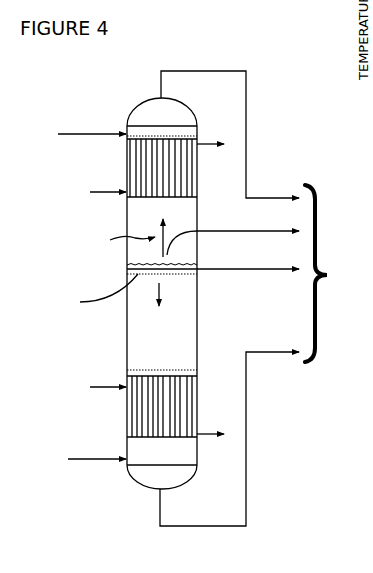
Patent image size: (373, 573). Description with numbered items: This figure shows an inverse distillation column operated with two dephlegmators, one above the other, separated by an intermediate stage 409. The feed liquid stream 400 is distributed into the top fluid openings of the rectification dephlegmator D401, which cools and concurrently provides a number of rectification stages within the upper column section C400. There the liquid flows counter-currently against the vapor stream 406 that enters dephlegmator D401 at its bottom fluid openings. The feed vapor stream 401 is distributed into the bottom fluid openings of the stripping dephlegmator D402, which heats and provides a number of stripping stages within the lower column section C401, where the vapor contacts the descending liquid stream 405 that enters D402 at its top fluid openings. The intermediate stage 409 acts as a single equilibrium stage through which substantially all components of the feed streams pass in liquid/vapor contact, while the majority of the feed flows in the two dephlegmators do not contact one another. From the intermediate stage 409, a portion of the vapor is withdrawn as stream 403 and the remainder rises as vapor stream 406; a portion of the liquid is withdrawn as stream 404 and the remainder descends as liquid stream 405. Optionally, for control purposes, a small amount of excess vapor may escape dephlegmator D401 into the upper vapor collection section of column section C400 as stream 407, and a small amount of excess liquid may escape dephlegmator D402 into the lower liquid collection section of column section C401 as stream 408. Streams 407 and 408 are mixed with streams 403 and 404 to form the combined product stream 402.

The feed liquid stream 400 is at (73, 135).
The feed vapor stream 401 is at (79, 459).
The combined product stream 402 is at (338, 273).
The withdrawn vapor stream 403 is at (248, 222).
The withdrawn liquid stream 404 is at (248, 282).
The liquid stream 405 is at (163, 306).
The vapor stream 406 is at (135, 238).
The excess vapor stream 407 is at (230, 122).
The excess liquid stream 408 is at (229, 453).
The intermediate stage 409 is at (116, 294).
The rectification dephlegmator D401 is at (144, 166).
The stripping dephlegmator D402 is at (144, 403).
The upper column section C400 is at (157, 232).
The lower column section C401 is at (157, 322).